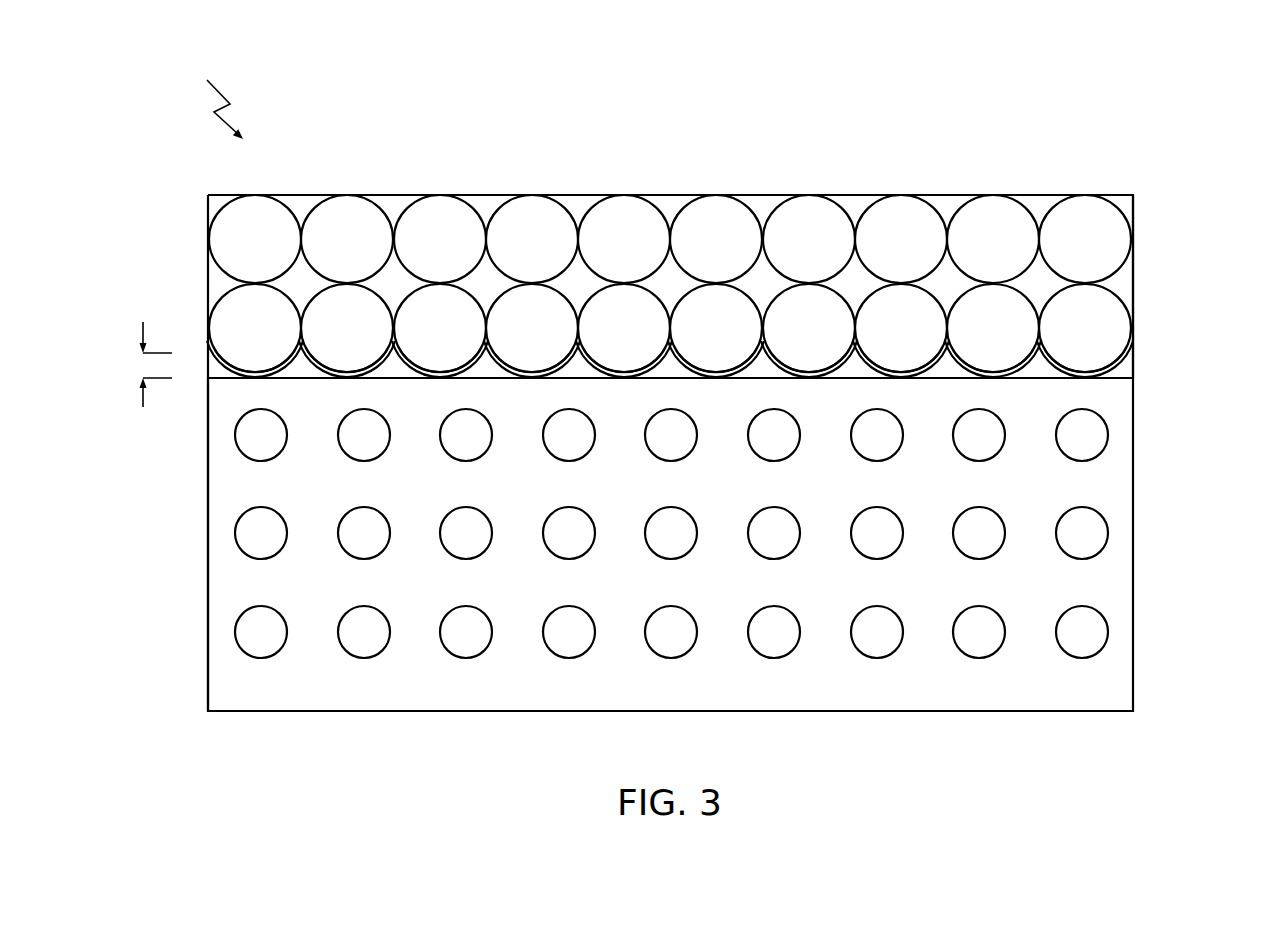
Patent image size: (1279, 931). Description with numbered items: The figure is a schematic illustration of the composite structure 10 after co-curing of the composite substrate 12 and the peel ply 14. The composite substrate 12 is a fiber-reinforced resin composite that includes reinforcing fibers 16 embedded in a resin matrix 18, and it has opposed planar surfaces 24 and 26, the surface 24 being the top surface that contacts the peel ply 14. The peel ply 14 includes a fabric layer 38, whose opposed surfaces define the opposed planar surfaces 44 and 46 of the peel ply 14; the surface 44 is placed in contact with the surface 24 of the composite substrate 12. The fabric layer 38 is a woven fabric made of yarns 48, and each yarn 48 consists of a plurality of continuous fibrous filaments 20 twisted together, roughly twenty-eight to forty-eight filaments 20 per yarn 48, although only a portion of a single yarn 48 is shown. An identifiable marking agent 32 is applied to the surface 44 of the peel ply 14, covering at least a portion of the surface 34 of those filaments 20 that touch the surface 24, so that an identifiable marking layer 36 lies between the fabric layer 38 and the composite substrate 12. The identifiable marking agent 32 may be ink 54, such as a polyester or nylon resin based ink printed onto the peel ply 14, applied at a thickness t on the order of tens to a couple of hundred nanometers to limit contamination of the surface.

The composite structure 10 is at (654, 383).
The composite substrate 12 is at (208, 537).
The peel ply 14 is at (208, 200).
The fibers 16 is at (449, 453).
The resin matrix 18 is at (218, 610).
The filaments 20 is at (268, 205).
The surface 24 is at (226, 385).
The surface 26 is at (326, 712).
The identifiable marking agent 32 is at (1130, 356).
The surface 34 is at (259, 366).
The identifiable marking layer 36 is at (1160, 372).
The fabric layer 38 is at (1160, 283).
The surface 44 is at (219, 374).
The surface 46 is at (297, 193).
The yarn 48 is at (192, 278).
The ink 54 is at (254, 381).